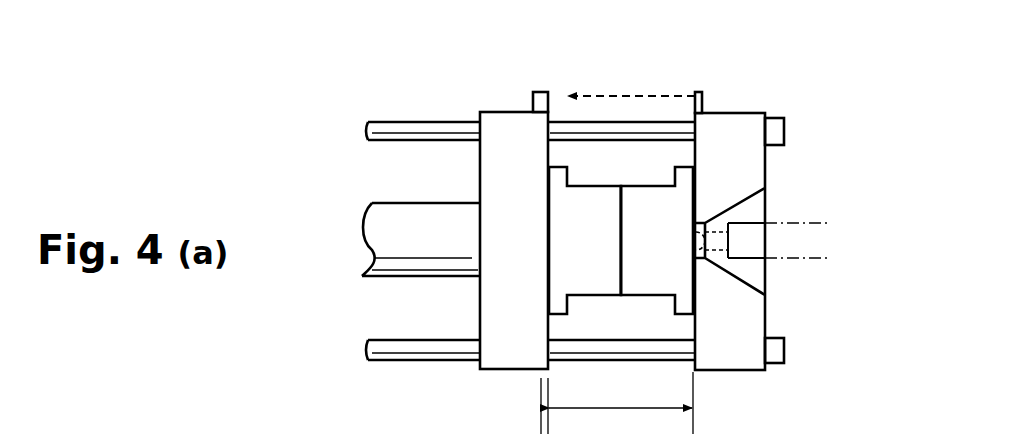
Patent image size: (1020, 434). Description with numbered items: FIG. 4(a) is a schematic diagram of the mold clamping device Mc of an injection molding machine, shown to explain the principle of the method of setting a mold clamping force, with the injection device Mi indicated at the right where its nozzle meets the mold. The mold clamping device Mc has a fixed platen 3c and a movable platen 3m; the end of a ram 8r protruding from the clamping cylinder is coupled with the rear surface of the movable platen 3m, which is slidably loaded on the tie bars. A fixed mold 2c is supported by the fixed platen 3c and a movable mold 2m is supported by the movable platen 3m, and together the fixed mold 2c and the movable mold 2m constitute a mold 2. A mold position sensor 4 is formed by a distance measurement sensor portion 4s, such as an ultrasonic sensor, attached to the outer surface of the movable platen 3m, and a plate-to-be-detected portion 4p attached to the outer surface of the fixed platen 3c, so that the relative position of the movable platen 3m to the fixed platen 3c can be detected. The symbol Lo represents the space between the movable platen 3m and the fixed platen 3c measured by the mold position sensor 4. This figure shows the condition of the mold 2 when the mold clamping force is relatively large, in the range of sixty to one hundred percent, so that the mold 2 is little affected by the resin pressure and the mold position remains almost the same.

The mold position sensor 4 is at (497, 47).
The distance measurement sensor portion 4s is at (538, 92).
The plate-to-be-detected portion 4p is at (698, 92).
The movable platen 3m is at (494, 112).
The fixed platen 3c is at (765, 313).
The ram 8r is at (440, 203).
The movable mold 2m is at (597, 186).
The fixed mold 2c is at (646, 186).
The mold 2 is at (652, 316).
The mold clamping device Mc is at (786, 82).
The injection device Mi is at (818, 218).
The space between the movable platen and the fixed platen Lo is at (617, 403).